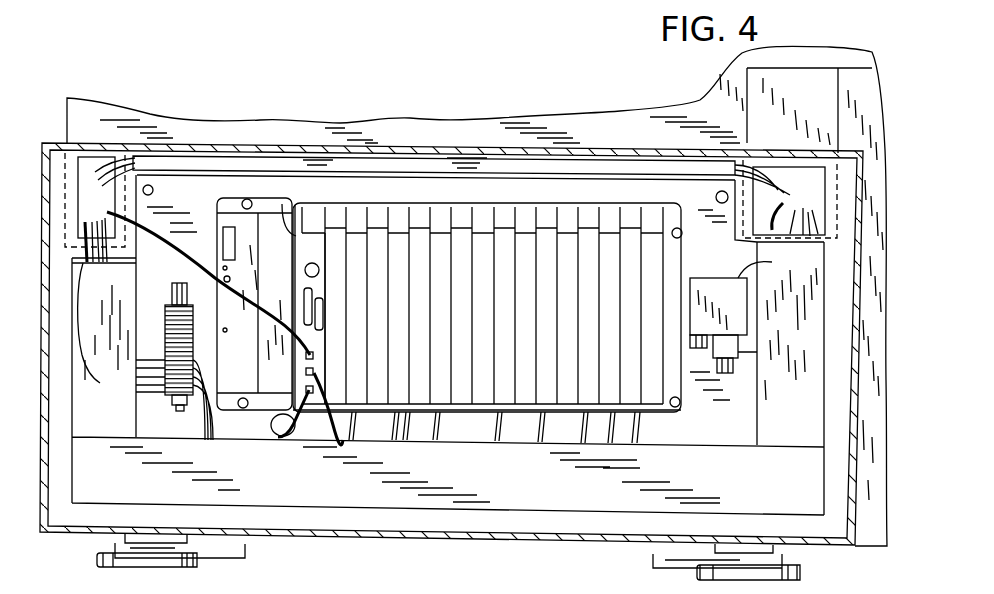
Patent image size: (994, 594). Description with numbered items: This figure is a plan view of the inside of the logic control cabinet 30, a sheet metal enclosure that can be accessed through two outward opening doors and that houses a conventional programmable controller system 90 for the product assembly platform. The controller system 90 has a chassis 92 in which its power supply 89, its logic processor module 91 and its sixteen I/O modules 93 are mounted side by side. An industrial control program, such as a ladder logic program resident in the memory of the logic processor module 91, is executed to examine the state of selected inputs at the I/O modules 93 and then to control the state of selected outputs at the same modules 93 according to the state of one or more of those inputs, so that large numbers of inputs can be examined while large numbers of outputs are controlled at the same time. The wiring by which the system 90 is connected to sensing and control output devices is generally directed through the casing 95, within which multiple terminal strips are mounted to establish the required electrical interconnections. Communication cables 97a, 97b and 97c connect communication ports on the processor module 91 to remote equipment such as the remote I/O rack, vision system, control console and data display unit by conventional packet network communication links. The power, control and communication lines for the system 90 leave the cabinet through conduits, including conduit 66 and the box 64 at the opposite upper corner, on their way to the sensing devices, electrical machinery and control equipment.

The logic control cabinet 30 is at (325, 538).
The right conduit box 64 is at (816, 200).
The conduit 66 is at (107, 205).
The power supply 89 is at (248, 375).
The programmable controller system 90 is at (228, 299).
The logic processor module 91 is at (467, 295).
The chassis 92 is at (652, 412).
The I/O modules 93 is at (570, 280).
The casing 95 is at (118, 430).
The communication cable 97a is at (134, 256).
The communication cable 97b is at (277, 418).
The communication cable 97c is at (770, 236).